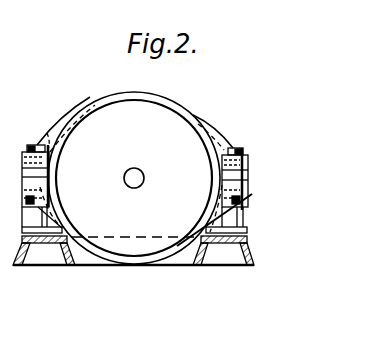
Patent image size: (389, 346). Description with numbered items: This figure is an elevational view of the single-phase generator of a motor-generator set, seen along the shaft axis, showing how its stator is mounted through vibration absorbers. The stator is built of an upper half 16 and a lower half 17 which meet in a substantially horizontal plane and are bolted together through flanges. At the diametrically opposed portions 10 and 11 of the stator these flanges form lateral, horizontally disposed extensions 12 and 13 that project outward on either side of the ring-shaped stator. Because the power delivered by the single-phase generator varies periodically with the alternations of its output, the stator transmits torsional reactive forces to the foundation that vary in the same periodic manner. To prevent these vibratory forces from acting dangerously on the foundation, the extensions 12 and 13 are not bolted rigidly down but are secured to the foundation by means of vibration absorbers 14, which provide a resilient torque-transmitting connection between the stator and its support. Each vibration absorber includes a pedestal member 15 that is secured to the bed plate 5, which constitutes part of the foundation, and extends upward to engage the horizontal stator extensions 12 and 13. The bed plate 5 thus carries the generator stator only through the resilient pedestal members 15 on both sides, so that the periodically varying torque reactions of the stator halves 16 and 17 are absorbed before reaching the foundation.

The bed plate 5 is at (250, 258).
The diametrically opposed portion 10 is at (50, 177).
The diametrically opposed portion 11 is at (224, 170).
The lateral extension 12 is at (22, 178).
The lateral extension 13 is at (248, 177).
The vibration absorber 14 is at (252, 196).
The pedestal member 15 is at (235, 226).
The upper stator half 16 is at (188, 117).
The lower stator half 17 is at (194, 230).